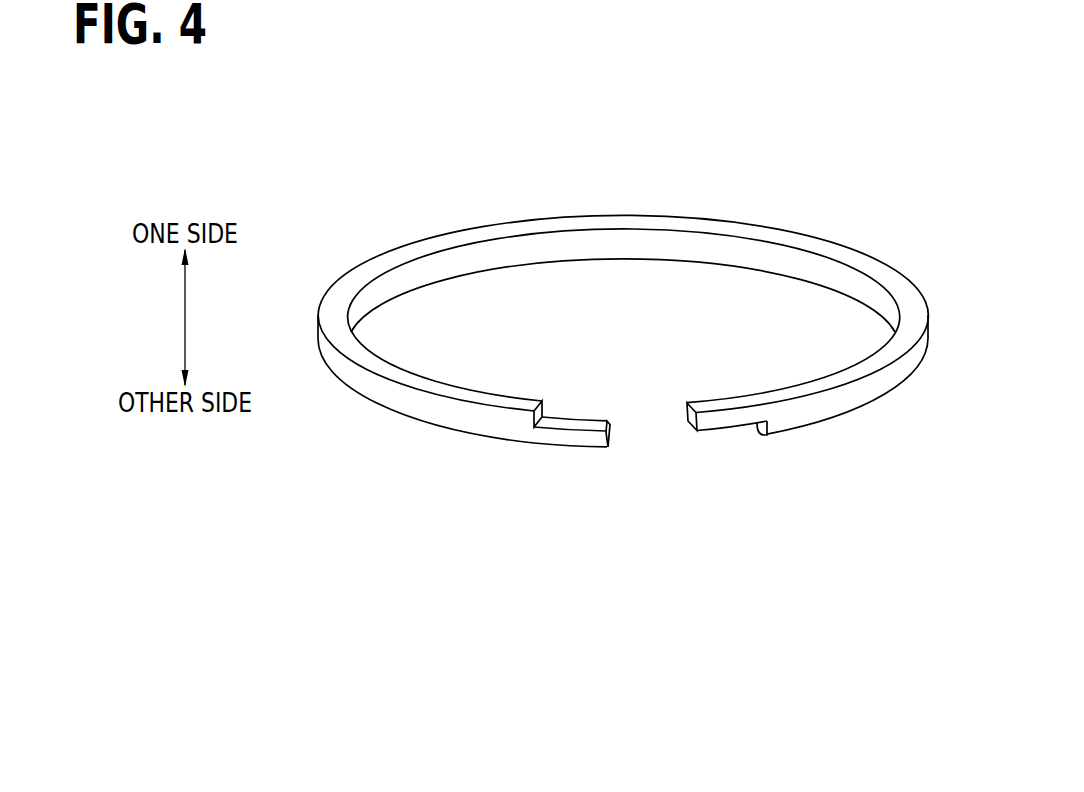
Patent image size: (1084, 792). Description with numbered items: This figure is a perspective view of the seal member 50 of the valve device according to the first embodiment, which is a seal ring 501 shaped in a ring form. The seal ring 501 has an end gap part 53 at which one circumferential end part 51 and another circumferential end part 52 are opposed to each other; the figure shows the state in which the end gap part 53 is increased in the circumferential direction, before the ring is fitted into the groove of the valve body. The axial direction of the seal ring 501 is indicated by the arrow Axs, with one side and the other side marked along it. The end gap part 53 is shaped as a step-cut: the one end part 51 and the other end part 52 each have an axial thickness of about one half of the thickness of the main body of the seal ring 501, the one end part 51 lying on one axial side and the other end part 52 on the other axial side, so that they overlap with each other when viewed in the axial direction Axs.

The seal member 50 is at (623, 345).
The seal ring 501 is at (623, 389).
The one end part 51 is at (722, 430).
The other end part 52 is at (560, 440).
The end gap part 53 is at (648, 452).
The axial direction Axs is at (186, 316).